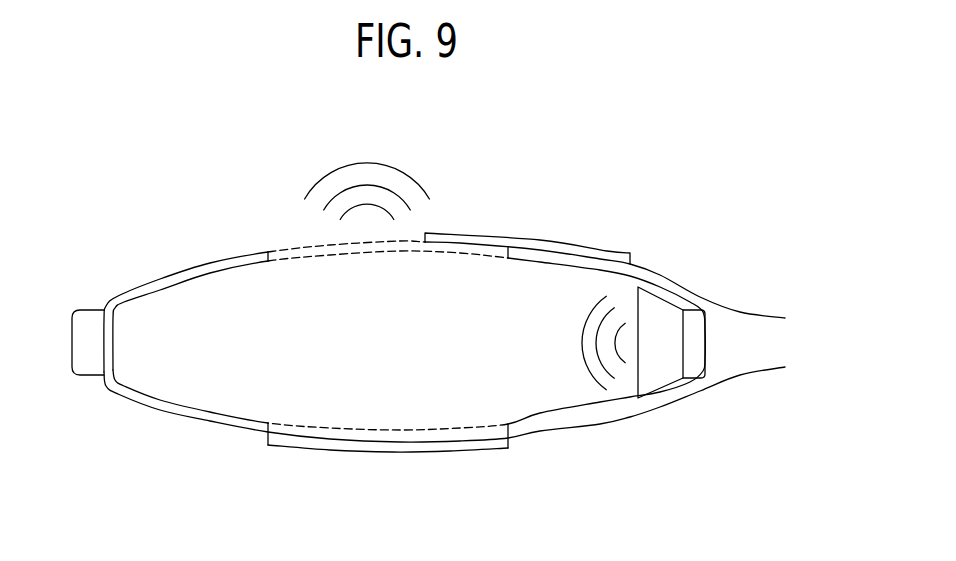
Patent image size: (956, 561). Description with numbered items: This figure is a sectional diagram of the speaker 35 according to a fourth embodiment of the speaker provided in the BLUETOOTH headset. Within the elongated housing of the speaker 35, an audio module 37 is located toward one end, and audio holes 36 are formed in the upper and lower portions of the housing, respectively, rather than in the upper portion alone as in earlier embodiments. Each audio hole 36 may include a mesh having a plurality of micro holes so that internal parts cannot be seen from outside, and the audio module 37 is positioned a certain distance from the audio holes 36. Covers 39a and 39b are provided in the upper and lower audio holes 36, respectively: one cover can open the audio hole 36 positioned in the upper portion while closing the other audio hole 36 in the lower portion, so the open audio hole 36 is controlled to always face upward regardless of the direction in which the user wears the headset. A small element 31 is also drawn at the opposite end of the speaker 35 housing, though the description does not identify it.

The button 31 is at (86, 323).
The speaker 35 is at (562, 178).
The audio hole 36 is at (296, 246).
The audio module 37 is at (657, 308).
The cover 39a is at (608, 252).
The cover 39b is at (385, 449).